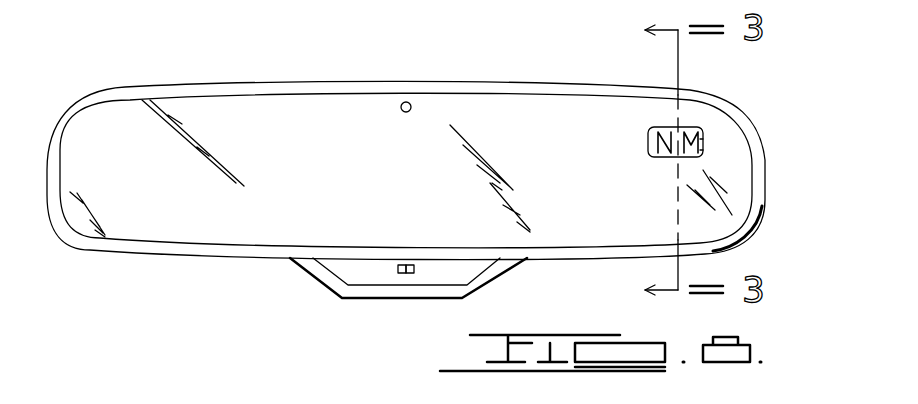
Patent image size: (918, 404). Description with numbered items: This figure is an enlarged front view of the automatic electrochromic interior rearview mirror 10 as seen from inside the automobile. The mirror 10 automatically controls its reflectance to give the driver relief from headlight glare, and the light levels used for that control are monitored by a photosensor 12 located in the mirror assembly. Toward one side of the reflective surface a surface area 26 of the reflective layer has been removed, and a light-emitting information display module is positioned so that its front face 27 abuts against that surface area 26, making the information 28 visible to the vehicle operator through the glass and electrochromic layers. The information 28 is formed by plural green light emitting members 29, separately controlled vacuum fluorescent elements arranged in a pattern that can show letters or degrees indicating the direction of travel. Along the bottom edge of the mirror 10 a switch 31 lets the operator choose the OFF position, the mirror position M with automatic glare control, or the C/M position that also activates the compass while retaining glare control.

The electrochromic mirror 10 is at (129, 78).
The photosensor 12 is at (406, 101).
The surface area 26 is at (705, 137).
The front face 27 is at (646, 138).
The information 28 is at (684, 160).
The light emitting members 29 is at (702, 139).
The switch 31 is at (293, 282).